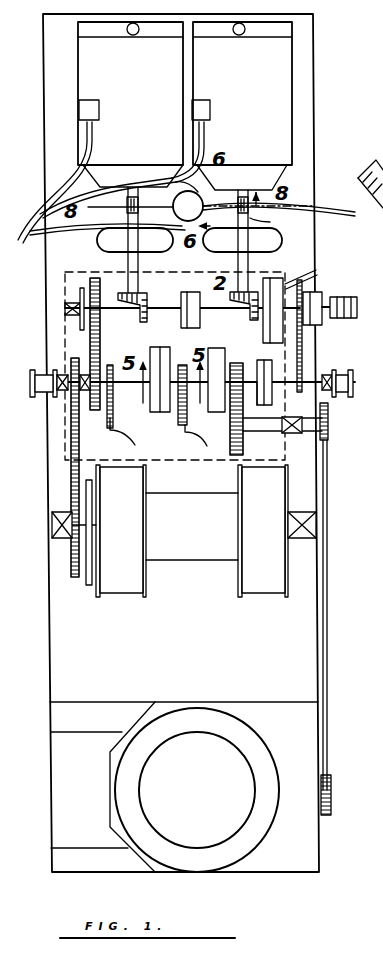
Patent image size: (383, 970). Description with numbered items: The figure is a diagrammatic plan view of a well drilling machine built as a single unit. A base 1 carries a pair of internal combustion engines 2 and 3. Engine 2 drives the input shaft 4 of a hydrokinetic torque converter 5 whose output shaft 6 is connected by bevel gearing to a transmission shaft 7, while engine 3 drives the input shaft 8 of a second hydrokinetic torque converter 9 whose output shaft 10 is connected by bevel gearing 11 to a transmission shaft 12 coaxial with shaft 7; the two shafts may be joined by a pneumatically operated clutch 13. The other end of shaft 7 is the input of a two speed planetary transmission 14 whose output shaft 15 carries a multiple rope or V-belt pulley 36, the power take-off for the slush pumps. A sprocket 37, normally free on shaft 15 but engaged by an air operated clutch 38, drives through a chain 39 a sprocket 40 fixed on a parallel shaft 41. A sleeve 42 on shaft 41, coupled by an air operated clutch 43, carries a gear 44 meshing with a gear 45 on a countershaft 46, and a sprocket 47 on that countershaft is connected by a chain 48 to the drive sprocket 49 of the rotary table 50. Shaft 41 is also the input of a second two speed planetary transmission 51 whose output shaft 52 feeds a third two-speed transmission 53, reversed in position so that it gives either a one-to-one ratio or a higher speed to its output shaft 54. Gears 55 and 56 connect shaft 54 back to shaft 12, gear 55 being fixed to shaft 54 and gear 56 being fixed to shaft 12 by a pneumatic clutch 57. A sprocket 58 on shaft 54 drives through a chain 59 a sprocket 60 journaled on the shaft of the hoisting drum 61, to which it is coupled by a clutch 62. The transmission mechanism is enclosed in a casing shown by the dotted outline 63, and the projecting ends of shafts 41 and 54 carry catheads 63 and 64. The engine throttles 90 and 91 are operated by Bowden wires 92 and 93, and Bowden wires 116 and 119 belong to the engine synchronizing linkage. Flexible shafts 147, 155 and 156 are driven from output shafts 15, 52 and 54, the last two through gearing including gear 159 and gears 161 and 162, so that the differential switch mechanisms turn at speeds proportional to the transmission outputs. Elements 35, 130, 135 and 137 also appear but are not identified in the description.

The base 1 is at (300, 132).
The internal combustion engine 2 is at (280, 76).
The internal combustion engine 3 is at (82, 66).
The input shaft 4 is at (258, 216).
The hydrokinetic torque converter 5 is at (280, 240).
The output shaft 6 is at (251, 282).
The transmission shaft 7 is at (244, 320).
The input shaft 8 is at (140, 226).
The hydrokinetic torque converter 9 is at (97, 240).
The output shaft 10 is at (125, 258).
The bevel gearing 11 is at (147, 303).
The transmission shaft 12 is at (173, 312).
The pneumatically operated clutch 13 is at (195, 285).
The two speed transmission 14 is at (300, 346).
The output shaft 15 is at (310, 334).
The cutter 35 is at (380, 140).
The multiple rope or V-belt pulley 36 is at (345, 298).
The sprocket 37 is at (316, 298).
The air operated clutch 38 is at (352, 312).
The chain 39 is at (320, 362).
The sprocket 40 is at (332, 380).
The shaft 41 is at (276, 374).
The sleeve 42 is at (250, 358).
The air operated clutch 43 is at (262, 406).
The gear 44 is at (215, 374).
The gear 45 is at (243, 450).
The countershaft 46 is at (255, 430).
The sprocket 47 is at (329, 418).
The chain 48 is at (330, 500).
The drive sprocket 49 is at (332, 790).
The rotary table 50 is at (225, 762).
The two speed planetary transmission 51 is at (213, 352).
The output shaft 52 is at (179, 395).
The two-speed transmission 53 is at (157, 348).
The output shaft 54 is at (150, 396).
The gear 55 is at (150, 366).
The gear 56 is at (100, 333).
The pneumatic clutch 57 is at (82, 310).
The sprocket 58 is at (60, 362).
The chain 59 is at (70, 430).
The sprocket 60 is at (144, 404).
The hoisting drum 61 is at (168, 550).
The clutch 62 is at (86, 578).
The casing 63 is at (65, 282).
The cathead 64 is at (34, 386).
The throttle 90 is at (205, 108).
The throttle 91 is at (89, 110).
The Bowden wire 92 is at (202, 160).
The Bowden wire 93 is at (36, 165).
The Bowden wire 116 is at (68, 238).
The Bowden wire 119 is at (64, 190).
The tube 130 is at (330, 210).
The block 135 is at (265, 310).
The chain 137 is at (304, 282).
The flexible shaft 147 is at (318, 280).
The flexible shaft 155 is at (206, 436).
The flexible shaft 156 is at (136, 436).
The gear 159 is at (185, 432).
The gear 161 is at (110, 430).
The gear 162 is at (121, 396).